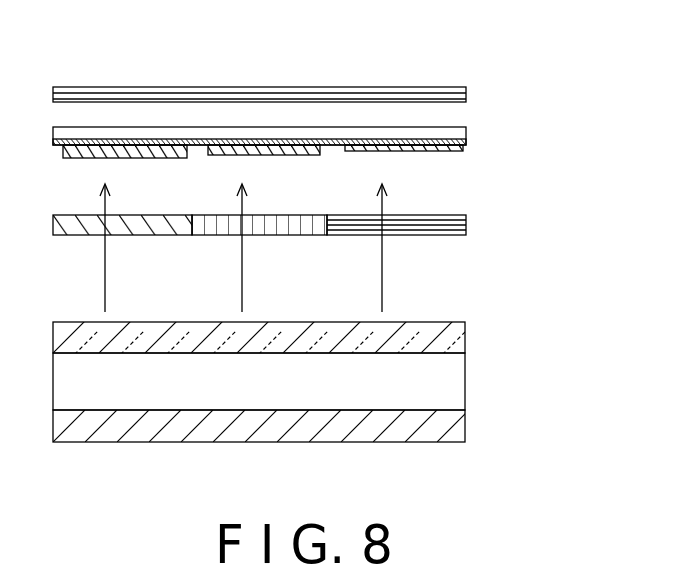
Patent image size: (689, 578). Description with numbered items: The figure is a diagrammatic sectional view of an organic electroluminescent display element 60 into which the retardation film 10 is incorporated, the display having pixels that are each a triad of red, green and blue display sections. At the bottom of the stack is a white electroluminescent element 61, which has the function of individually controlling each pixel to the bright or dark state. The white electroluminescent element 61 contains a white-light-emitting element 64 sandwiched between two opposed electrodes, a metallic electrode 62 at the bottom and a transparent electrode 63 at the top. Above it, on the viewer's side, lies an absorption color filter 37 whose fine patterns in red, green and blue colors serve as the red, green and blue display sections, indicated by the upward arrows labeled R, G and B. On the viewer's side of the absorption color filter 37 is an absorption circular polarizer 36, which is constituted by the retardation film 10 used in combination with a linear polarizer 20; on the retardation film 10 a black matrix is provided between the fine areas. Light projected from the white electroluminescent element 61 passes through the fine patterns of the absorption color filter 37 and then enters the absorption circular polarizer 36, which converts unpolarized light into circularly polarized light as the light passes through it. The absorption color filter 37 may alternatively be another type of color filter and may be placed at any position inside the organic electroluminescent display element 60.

The organic electroluminescent display element 60 is at (485, 75).
The absorption circular polarizer 36 is at (328, 122).
The linear polarizer 20 is at (466, 95).
The retardation film 10 is at (463, 134).
The absorption color filter 37 is at (466, 222).
The white electroluminescent element 61 is at (327, 384).
The transparent electrode 63 is at (457, 340).
The white-light-emitting element 64 is at (455, 382).
The metallic electrode 62 is at (295, 427).